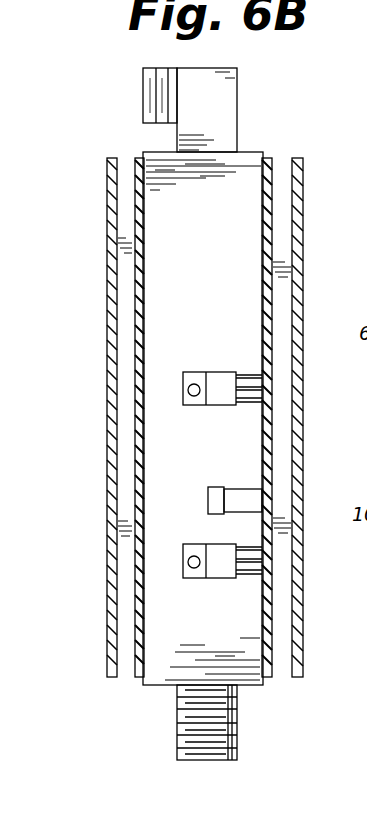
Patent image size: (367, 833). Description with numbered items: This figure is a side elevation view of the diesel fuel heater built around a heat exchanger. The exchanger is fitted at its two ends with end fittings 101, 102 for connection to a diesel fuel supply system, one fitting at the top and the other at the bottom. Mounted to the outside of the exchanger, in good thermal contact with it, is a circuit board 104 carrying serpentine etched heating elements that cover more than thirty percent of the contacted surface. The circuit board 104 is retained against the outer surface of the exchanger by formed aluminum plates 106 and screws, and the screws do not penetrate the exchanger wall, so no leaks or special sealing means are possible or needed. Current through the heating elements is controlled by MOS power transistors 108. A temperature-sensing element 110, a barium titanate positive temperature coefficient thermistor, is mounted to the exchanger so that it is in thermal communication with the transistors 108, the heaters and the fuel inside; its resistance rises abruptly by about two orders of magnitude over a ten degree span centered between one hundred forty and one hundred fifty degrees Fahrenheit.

The end fitting 101 is at (237, 88).
The end fitting 102 is at (177, 722).
The circuit board 104 is at (143, 155).
The formed aluminum plate 106 is at (107, 512).
The MOS power transistor 108 is at (183, 381).
The temperature-sensing element 110 is at (217, 487).